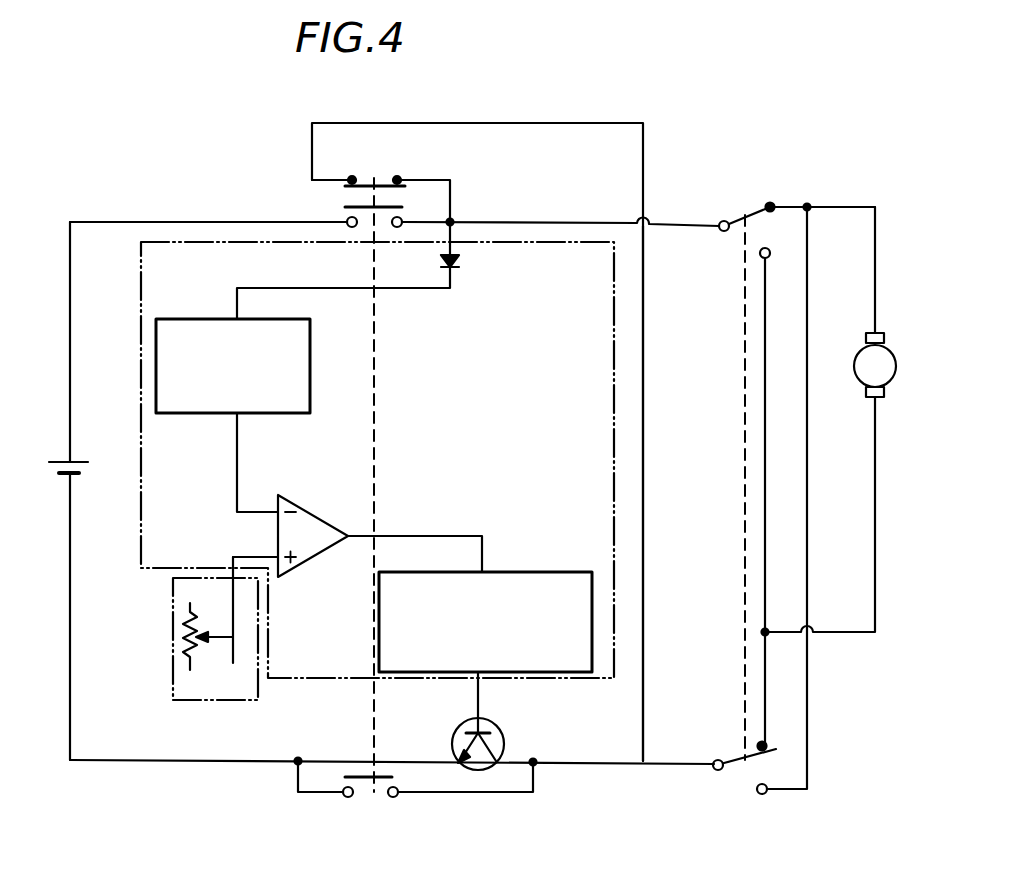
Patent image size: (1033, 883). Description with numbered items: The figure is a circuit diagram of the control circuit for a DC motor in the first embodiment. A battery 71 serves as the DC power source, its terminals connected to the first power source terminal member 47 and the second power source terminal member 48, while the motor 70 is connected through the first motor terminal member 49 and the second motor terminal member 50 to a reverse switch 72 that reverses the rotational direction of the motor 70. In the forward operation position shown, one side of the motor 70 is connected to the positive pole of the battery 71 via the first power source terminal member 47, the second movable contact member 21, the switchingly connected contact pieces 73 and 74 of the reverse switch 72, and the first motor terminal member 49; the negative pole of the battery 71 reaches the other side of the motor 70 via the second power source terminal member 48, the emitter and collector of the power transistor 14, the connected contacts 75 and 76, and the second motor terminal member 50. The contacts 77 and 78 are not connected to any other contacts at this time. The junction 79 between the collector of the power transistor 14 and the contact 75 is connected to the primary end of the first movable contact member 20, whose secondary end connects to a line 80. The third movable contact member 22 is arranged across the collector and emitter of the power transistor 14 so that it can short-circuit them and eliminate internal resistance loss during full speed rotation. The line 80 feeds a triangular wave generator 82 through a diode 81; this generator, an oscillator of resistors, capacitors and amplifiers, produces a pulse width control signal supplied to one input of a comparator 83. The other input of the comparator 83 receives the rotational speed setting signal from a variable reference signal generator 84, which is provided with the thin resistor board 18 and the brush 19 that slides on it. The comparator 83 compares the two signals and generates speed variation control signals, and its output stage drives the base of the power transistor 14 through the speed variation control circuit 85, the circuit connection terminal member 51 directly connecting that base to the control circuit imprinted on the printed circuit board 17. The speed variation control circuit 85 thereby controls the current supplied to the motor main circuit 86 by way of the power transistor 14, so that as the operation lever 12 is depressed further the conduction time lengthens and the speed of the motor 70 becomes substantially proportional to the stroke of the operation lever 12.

The operation lever 12 is at (374, 457).
The power transistor 14 is at (500, 732).
The printed circuit board 17 is at (138, 510).
The resistor board 18 is at (178, 642).
The brush 19 is at (232, 663).
The first movable contact member 20 is at (388, 180).
The second movable contact member 21 is at (345, 207).
The third movable contact member 22 is at (355, 775).
The first power source terminal member 47 is at (70, 360).
The second power source terminal member 48 is at (70, 648).
The first motor terminal member 49 is at (875, 276).
The second motor terminal member 50 is at (875, 496).
The circuit connection terminal member 51 is at (478, 700).
The motor 70 is at (862, 372).
The battery 71 is at (62, 462).
The reverse switch 72 is at (745, 510).
The contact piece of reverse switch 73 is at (724, 221).
The contact piece of reverse switch 74 is at (772, 203).
The contact of reverse switch 75 is at (716, 759).
The contact of reverse switch 76 is at (758, 741).
The contact of reverse switch 77 is at (768, 250).
The contact of reverse switch 78 is at (762, 800).
The junction 79 is at (642, 763).
The line 80 is at (492, 222).
The diode 81 is at (459, 262).
The triangular wave generator 82 is at (185, 318).
The comparator 83 is at (292, 503).
The variable reference signal generator 84 is at (232, 700).
The speed variation control circuit 85 is at (512, 572).
The motor main circuit 86 is at (190, 761).